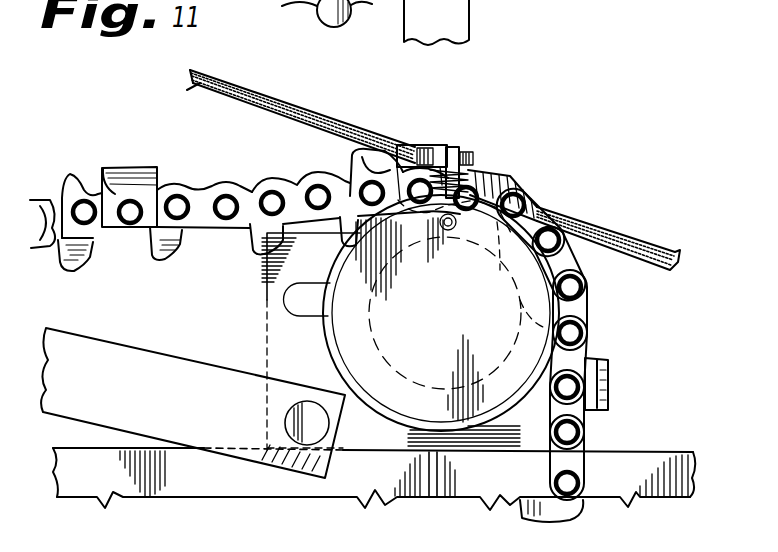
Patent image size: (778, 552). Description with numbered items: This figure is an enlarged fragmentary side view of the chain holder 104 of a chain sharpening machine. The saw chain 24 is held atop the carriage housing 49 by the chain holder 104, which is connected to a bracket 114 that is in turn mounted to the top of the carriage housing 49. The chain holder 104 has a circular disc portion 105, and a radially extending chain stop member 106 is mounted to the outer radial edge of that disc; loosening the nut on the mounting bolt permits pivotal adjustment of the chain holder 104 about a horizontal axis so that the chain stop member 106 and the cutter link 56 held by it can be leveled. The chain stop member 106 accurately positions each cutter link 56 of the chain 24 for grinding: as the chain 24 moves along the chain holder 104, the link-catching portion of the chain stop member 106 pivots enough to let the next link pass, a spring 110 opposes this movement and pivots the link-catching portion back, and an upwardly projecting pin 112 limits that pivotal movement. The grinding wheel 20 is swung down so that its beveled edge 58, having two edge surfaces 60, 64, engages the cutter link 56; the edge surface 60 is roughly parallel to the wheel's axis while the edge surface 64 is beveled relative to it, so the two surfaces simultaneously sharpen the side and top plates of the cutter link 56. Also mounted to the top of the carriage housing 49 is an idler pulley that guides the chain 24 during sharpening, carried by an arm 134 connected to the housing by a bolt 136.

The grinding wheel 20 is at (290, 111).
The edge surface 64 is at (265, 94).
The edge surface 60 is at (222, 96).
The grinding wheel edge 58 is at (260, 116).
The chain holder 104 is at (474, 281).
The cutter link 56 is at (426, 135).
The upwardly projecting pin 112 is at (466, 148).
The chain stop member 106 is at (462, 166).
The spring 110 is at (467, 176).
The circular disc portion 105 is at (484, 238).
The bracket 114 is at (268, 327).
The chain 24 is at (581, 292).
The arm 134 is at (112, 362).
The bolt 136 is at (324, 429).
The carriage housing 49 is at (625, 450).